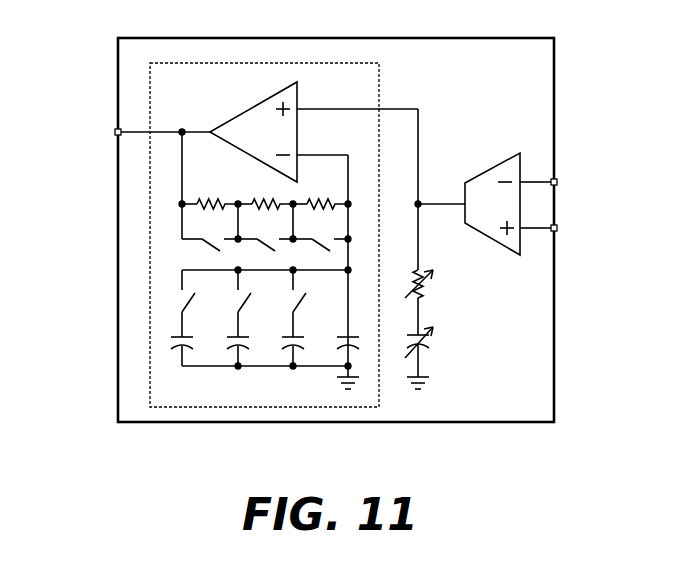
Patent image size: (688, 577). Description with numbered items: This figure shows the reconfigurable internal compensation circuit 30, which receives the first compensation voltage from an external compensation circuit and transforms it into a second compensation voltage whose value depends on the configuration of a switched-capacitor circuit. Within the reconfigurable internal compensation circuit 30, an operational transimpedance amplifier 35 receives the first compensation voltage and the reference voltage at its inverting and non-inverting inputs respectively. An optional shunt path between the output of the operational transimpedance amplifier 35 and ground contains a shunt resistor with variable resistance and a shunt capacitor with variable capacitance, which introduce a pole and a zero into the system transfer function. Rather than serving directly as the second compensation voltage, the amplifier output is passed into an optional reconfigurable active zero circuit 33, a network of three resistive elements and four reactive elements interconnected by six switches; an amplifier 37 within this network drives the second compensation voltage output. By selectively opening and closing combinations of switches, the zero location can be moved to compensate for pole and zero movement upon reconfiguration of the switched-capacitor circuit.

The reconfigurable internal compensation circuit 30 is at (514, 402).
The reconfigurable active zero circuit 33 is at (390, 81).
The operational transimpedance amplifier 35 is at (478, 168).
The operational amplifier 37 is at (225, 117).